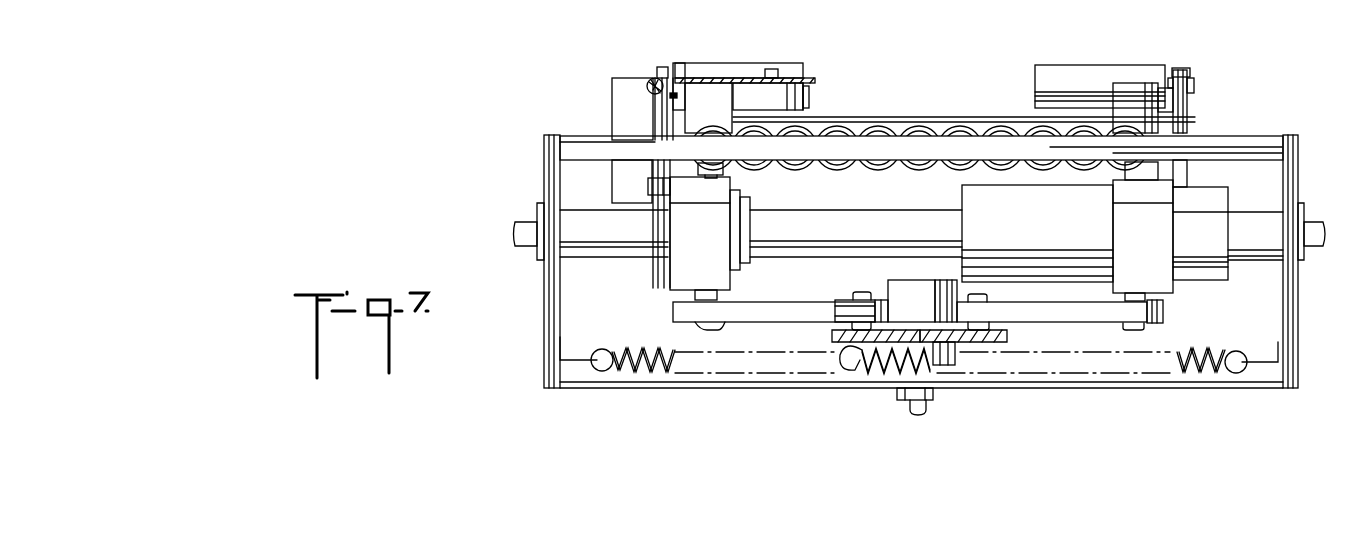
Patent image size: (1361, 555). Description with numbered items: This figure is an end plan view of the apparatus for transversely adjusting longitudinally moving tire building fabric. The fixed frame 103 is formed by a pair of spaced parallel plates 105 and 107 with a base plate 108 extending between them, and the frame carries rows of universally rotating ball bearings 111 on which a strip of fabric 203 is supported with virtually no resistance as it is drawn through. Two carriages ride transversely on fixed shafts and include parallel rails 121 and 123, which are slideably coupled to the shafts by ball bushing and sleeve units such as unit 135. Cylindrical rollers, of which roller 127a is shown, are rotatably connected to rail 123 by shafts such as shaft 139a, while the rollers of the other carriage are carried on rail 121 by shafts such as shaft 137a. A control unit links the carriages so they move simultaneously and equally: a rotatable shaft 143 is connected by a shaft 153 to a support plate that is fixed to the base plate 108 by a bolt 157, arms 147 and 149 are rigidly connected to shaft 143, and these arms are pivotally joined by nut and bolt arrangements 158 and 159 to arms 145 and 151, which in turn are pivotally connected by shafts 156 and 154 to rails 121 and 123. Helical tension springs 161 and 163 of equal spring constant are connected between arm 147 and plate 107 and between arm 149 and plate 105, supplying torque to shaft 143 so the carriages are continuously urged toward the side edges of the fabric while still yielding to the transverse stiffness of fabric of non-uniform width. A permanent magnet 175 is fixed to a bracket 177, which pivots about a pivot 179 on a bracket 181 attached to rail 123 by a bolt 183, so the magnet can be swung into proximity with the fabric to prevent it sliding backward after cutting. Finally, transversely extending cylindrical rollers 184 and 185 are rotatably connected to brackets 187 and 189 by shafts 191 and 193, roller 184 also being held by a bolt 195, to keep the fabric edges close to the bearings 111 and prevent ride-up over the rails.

The fixed frame 103 is at (1290, 148).
The plate 105 is at (1298, 286).
The plate 107 is at (545, 275).
The base plate 108 is at (1037, 388).
The universally rotating ball bearings 111 is at (992, 122).
The rail 121 is at (1152, 246).
The rail 123 is at (716, 250).
The cylindrical roller 127a is at (722, 112).
The ball bushing and sleeve unit 135 is at (750, 201).
The shaft 137a is at (1150, 180).
The shaft 139a is at (723, 176).
The rotatable shaft 143 is at (888, 282).
The arm 145 is at (1082, 312).
The arm 147 is at (1007, 336).
The arm 149 is at (832, 334).
The arm 151 is at (770, 302).
The shaft 153 is at (933, 370).
The shaft 154 is at (695, 295).
The shaft 156 is at (1145, 299).
The bolt 157 is at (900, 400).
The nut and bolt arrangement 158 is at (986, 322).
The nut and bolt arrangement 159 is at (855, 322).
The helical tension spring 161 is at (620, 352).
The helical tension spring 163 is at (1230, 352).
The permanent magnet 175 is at (810, 102).
The bracket 177 is at (746, 78).
The pivot 179 is at (652, 82).
The bracket 181 is at (612, 91).
The bolt 183 is at (648, 187).
The cylindrical roller 184 is at (1090, 65).
The cylindrical roller 185 is at (718, 62).
The bracket 187 is at (1182, 115).
The bracket 189 is at (662, 66).
The shaft 191 is at (1180, 68).
The shaft 193 is at (678, 63).
The bolt 195 is at (1194, 82).
The strip of fabric 203 is at (897, 118).